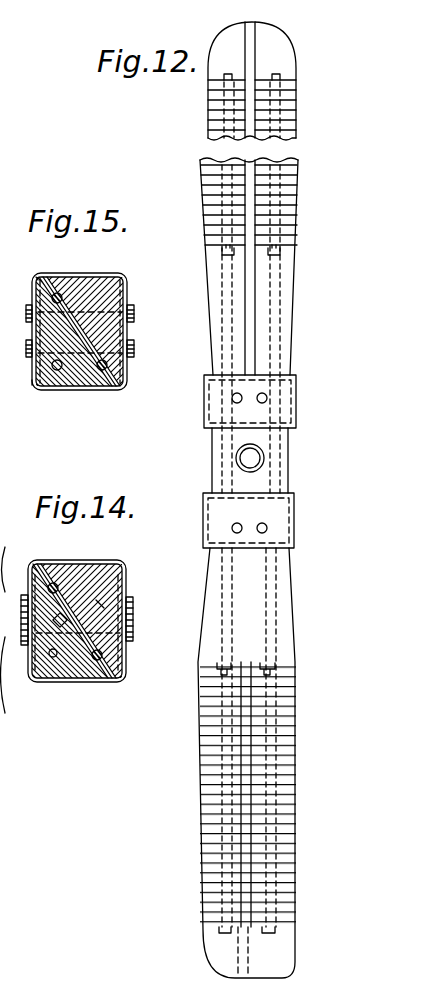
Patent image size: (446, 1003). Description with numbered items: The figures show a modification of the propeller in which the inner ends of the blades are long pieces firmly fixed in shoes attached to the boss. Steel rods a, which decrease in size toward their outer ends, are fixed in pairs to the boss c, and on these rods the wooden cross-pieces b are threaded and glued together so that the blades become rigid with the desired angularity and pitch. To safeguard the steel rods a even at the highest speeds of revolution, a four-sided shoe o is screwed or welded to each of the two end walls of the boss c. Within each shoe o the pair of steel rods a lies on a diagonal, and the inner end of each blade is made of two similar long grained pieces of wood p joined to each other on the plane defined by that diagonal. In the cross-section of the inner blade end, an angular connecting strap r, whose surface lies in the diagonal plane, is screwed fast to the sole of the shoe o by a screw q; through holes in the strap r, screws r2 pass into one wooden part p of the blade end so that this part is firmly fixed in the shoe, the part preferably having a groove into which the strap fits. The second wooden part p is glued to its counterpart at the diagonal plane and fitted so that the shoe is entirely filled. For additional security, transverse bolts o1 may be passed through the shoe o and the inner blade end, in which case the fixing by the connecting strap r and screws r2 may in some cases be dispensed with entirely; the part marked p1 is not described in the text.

In FIG. 12, the steel rods a is at (285, 305).
In FIG. 12, the cross-pieces b is at (286, 128).
In FIG. 12, the shoe o is at (283, 407).
In FIG. 12, the boss c is at (257, 482).
In FIG. 15, the long grained pieces of wood p is at (128, 283).
In FIG. 14, the long grained pieces of wood p is at (60, 593).
In FIG. 15, the transverse bolts o1 is at (132, 326).
In FIG. 15, the screw part p1 is at (16, 397).
In FIG. 14, the connecting strap r is at (83, 627).
In FIG. 14, the screws r2 is at (102, 598).
In FIG. 14, the screw q is at (60, 620).